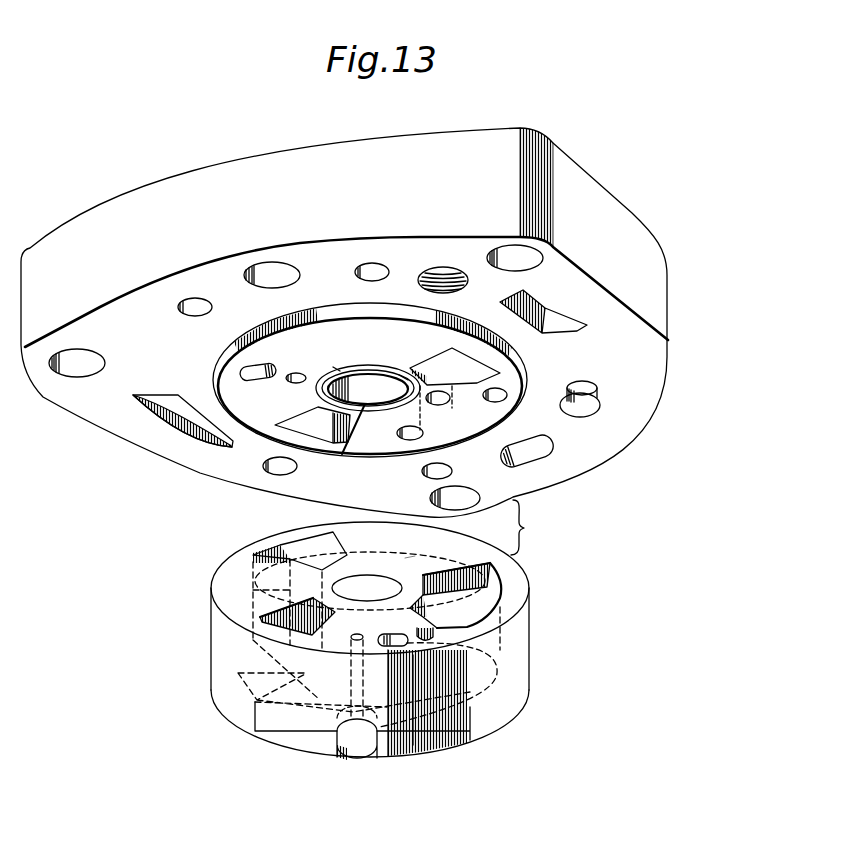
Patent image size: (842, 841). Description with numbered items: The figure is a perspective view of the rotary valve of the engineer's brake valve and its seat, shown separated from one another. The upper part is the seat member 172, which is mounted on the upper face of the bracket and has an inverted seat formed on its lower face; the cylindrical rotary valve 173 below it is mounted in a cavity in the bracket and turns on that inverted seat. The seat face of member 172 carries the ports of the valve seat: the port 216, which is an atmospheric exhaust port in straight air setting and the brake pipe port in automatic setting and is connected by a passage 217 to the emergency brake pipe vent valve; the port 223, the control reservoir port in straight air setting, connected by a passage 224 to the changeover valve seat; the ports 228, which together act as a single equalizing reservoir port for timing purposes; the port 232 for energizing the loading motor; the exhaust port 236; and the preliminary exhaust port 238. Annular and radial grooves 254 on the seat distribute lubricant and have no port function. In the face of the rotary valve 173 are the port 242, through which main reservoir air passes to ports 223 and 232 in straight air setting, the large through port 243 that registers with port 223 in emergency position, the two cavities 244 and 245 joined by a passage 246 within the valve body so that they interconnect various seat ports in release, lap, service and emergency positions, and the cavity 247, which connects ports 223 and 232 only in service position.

The seat member 172 is at (615, 216).
The rotary valve 173 is at (517, 659).
The port 216 is at (312, 425).
The passage 217 is at (161, 426).
The port 223 is at (441, 352).
The passage 224 is at (560, 296).
The port 228 is at (437, 405).
The port 232 is at (493, 399).
The port 236 is at (257, 366).
The port 238 is at (300, 373).
The port 242 is at (354, 640).
The through port 243 is at (280, 612).
The cavity 244 is at (492, 571).
The cavity 245 is at (293, 550).
The passage 246 is at (404, 558).
The cavity 247 is at (392, 640).
The annular and radial grooves 254 is at (379, 414).